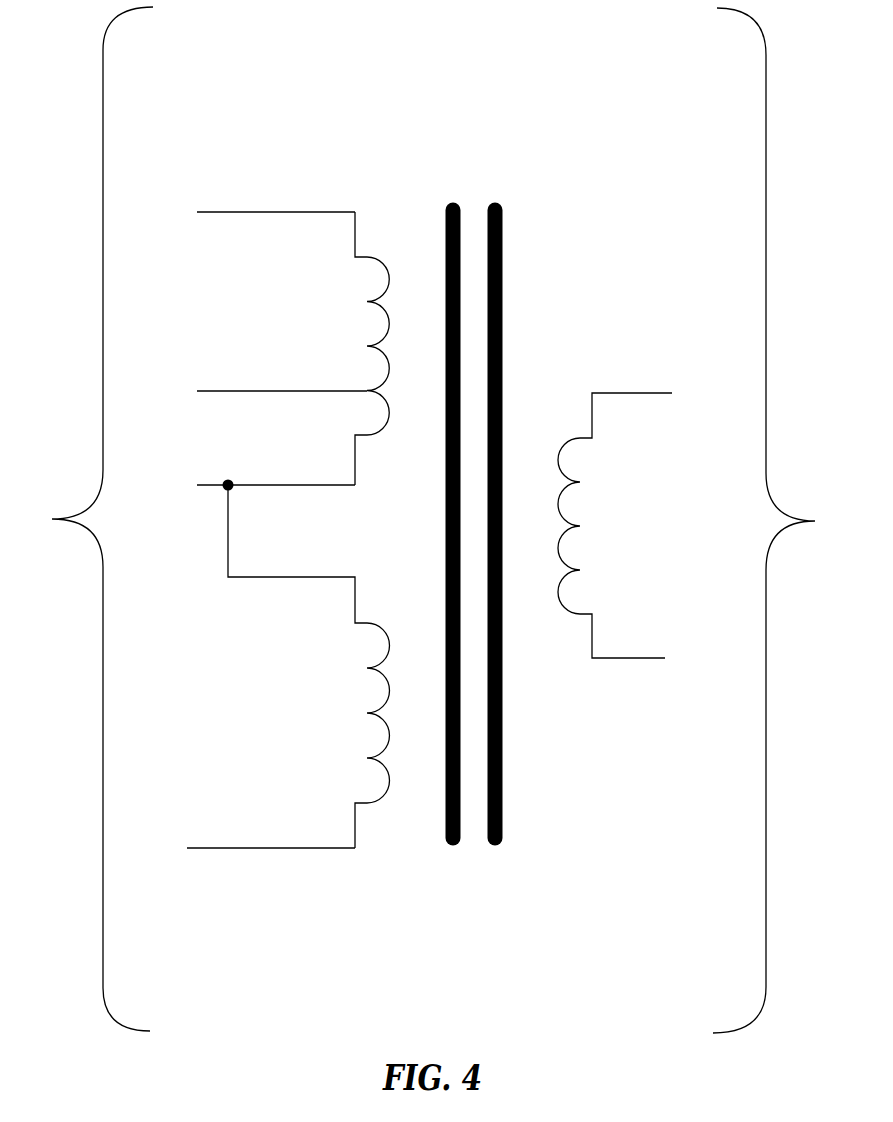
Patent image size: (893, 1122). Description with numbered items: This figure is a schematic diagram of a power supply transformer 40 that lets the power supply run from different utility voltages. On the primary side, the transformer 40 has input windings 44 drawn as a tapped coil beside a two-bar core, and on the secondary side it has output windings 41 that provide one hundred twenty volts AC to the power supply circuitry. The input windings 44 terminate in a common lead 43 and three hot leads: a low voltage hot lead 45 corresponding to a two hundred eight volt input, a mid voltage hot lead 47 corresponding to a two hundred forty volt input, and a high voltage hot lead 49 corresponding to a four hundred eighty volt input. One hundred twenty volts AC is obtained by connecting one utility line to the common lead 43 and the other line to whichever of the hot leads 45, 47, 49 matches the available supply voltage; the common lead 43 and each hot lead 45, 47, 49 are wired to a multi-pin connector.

The power supply transformer 40 is at (322, 42).
The output windings 41 is at (672, 393).
The common lead 43 is at (197, 212).
The input windings 44 is at (288, 292).
The low voltage hot lead 45 is at (197, 391).
The mid voltage hot lead 47 is at (197, 485).
The high voltage hot lead 49 is at (187, 848).